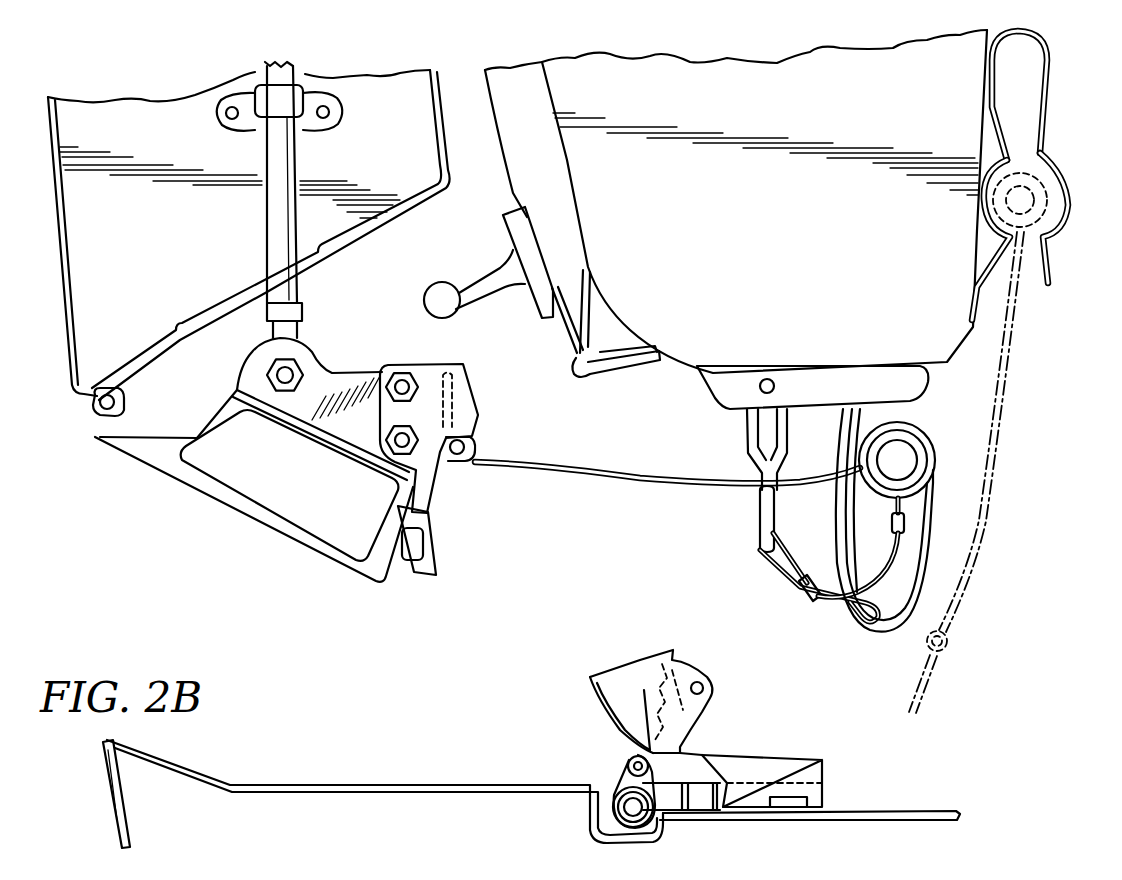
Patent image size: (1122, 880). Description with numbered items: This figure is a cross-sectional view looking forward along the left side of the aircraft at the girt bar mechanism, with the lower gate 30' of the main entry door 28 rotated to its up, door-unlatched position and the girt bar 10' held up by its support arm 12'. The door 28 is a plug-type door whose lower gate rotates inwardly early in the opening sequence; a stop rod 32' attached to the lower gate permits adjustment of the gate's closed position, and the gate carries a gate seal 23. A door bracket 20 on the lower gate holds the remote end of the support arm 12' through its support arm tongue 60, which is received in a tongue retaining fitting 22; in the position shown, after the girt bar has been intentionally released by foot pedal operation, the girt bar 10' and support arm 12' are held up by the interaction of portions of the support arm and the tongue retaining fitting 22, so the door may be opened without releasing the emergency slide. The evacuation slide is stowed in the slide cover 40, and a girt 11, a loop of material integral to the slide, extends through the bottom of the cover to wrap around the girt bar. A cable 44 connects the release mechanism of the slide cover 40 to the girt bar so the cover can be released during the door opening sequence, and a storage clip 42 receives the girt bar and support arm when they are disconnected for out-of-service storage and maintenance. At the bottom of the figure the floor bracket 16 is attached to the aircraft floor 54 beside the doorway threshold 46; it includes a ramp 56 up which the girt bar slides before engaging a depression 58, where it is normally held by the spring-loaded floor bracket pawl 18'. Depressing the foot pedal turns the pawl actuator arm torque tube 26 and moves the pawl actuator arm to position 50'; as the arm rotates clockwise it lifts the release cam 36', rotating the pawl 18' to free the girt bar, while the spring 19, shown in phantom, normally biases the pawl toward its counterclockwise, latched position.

The main entry door 28 is at (62, 258).
The stop rod 32' is at (273, 200).
The door bracket 20 is at (333, 372).
The support arm tongue 60 is at (460, 382).
The tongue retaining fitting 22 is at (483, 442).
The lower gate 30' is at (253, 485).
The gate seal 23 is at (433, 547).
The girt bar support arm 12' is at (667, 455).
The cable 44 is at (747, 463).
The slide cover 40 is at (970, 340).
The girt bar 10' is at (895, 504).
The girt 11 is at (880, 633).
The storage clip 42 is at (1069, 187).
The doorway threshold 46 is at (403, 787).
The aircraft floor 54 is at (843, 810).
The ramp 56 is at (763, 753).
The floor bracket 16 is at (749, 757).
The depression 58 is at (702, 750).
The release cam 36' is at (654, 690).
The spring 19 is at (663, 673).
The floor bracket pawl 18' is at (732, 674).
The pawl actuator arm 50' is at (604, 782).
The pawl actuator arm torque tube 26 is at (623, 817).